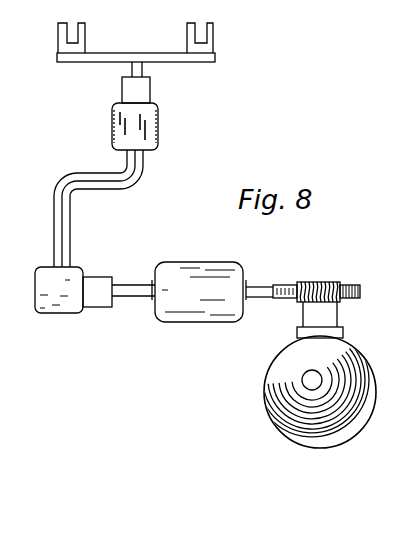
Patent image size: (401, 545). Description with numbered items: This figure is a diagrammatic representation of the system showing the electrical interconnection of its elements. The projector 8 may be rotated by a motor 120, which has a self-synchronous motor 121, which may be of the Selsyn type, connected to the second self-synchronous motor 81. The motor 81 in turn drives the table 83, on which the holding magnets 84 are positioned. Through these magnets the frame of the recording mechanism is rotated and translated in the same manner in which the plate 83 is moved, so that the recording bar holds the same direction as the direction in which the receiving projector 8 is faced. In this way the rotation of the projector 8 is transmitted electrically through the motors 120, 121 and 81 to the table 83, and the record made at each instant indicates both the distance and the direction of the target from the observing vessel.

The table 83 is at (130, 57).
The holding magnets 84 is at (210, 38).
The second self-synchronous motor 81 is at (157, 120).
The self-synchronous motor 121 is at (53, 313).
The motor 120 is at (212, 310).
The projector 8 is at (266, 398).